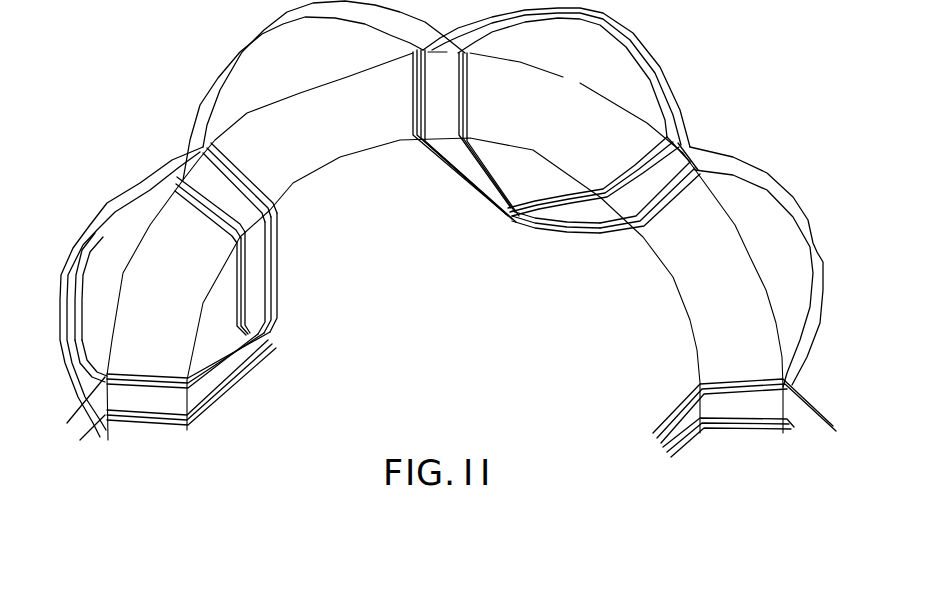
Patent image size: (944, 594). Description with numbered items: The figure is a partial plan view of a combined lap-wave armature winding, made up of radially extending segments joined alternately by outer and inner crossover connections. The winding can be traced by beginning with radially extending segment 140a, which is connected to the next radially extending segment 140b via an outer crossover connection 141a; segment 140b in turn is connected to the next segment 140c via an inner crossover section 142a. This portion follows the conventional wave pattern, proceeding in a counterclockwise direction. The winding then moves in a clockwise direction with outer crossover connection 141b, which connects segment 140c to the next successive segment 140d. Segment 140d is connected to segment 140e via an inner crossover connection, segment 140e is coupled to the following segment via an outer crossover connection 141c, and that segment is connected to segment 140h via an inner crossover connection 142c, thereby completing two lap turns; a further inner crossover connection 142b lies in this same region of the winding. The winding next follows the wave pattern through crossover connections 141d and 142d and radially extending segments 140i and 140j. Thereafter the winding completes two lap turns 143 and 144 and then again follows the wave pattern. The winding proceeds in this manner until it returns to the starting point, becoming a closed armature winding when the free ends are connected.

The radially extending segment 140a is at (727, 418).
The radially extending segment 140b is at (659, 180).
The radially extending segment 140c is at (491, 130).
The radially extending segment 140d is at (658, 203).
The radially extending segment 140e is at (588, 149).
The radially extending segment 140h is at (492, 134).
The radially extending segment 140i is at (234, 193).
The radially extending segment 140j is at (191, 378).
The outer crossover connection 141a is at (757, 267).
The outer crossover connection 141b is at (568, 77).
The outer crossover connection 141c is at (593, 77).
The crossover connection 141d is at (324, 90).
The inner crossover section 142a is at (556, 236).
The panel flange 142b is at (593, 197).
The inner crossover connection 142c is at (464, 138).
The crossover connection 142d is at (288, 274).
The lap turn 143 is at (131, 292).
The lap turn 144 is at (133, 286).